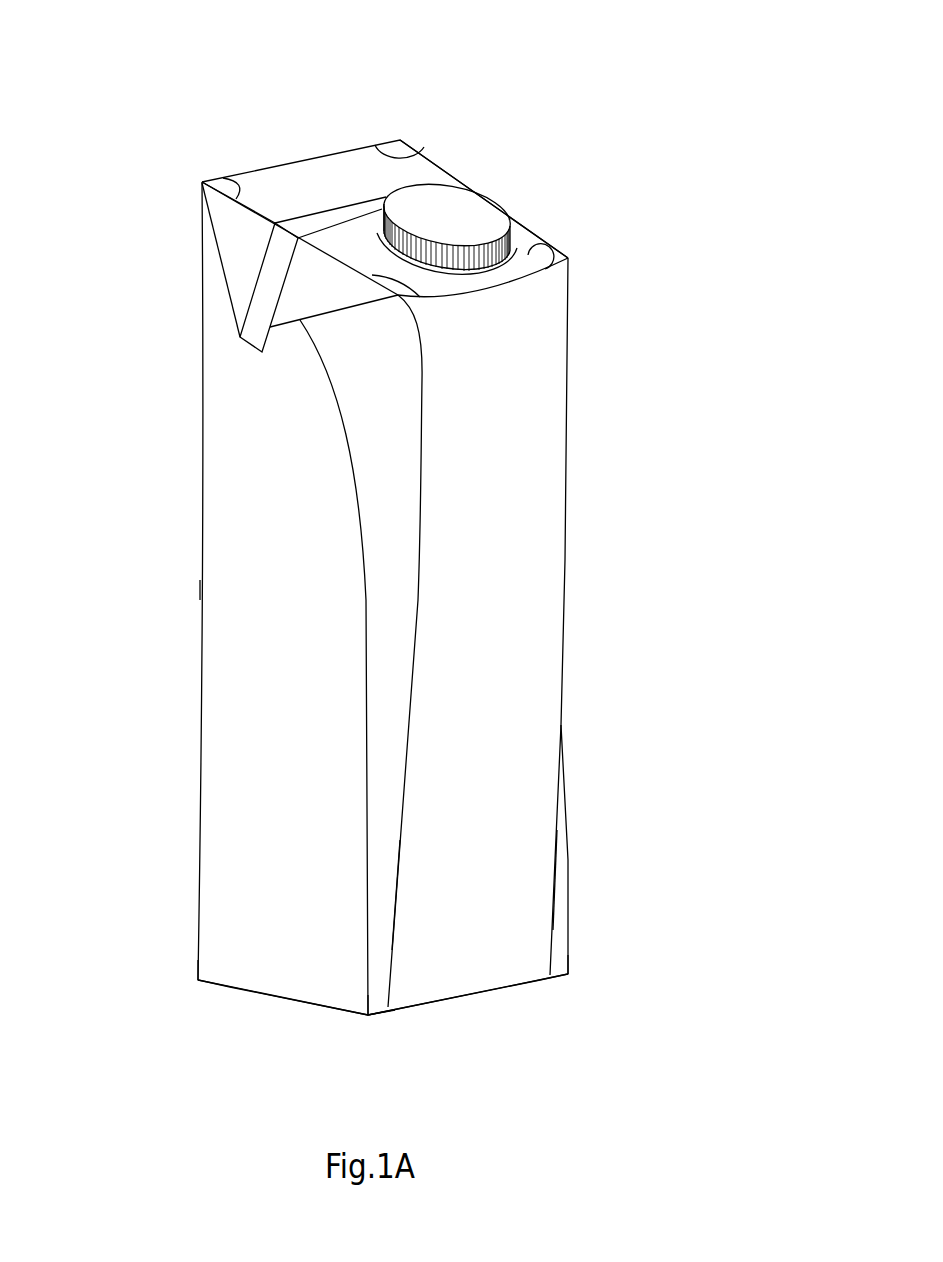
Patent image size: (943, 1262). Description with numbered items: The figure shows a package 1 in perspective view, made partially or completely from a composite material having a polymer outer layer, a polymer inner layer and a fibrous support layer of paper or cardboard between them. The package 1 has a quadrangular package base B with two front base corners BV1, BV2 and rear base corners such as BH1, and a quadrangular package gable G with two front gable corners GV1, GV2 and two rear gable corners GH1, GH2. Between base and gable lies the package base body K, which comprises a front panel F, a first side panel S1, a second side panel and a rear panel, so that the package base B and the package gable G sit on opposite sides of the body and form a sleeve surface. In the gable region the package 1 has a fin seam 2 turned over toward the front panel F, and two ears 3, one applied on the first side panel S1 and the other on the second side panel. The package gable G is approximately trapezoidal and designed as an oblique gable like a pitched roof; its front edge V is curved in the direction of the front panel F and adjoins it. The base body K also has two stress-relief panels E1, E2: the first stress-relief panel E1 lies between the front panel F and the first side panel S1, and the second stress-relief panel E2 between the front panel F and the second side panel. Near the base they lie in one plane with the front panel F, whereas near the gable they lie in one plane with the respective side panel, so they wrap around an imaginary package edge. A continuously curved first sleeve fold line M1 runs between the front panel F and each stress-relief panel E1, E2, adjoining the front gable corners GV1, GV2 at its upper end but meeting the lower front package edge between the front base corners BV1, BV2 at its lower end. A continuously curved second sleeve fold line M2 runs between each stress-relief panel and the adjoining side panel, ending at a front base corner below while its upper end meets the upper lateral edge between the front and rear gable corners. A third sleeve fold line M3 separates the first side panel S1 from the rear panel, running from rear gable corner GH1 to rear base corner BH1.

The package 1 is at (562, 97).
The fin seam 2 is at (265, 300).
The ear 3 is at (237, 233).
The package gable G is at (323, 170).
The rear gable corner GH1 is at (200, 180).
The rear gable corner GH2 is at (401, 140).
The front gable corner GV1 is at (570, 258).
The front gable corner GV2 is at (397, 298).
The front edge V is at (502, 291).
The first sleeve fold line M1 is at (424, 578).
The second sleeve fold line M2 is at (357, 507).
The third sleeve fold line M3 is at (203, 453).
The first side panel S1 is at (302, 700).
The front panel F is at (498, 702).
The first stress-relief panel E1 is at (385, 835).
The second stress-relief panel E2 is at (560, 928).
The rear base corner BH1 is at (197, 981).
The front base corner BV1 is at (569, 976).
The front base corner BV2 is at (368, 1018).
The package base B is at (282, 1007).
The package base body K is at (160, 592).